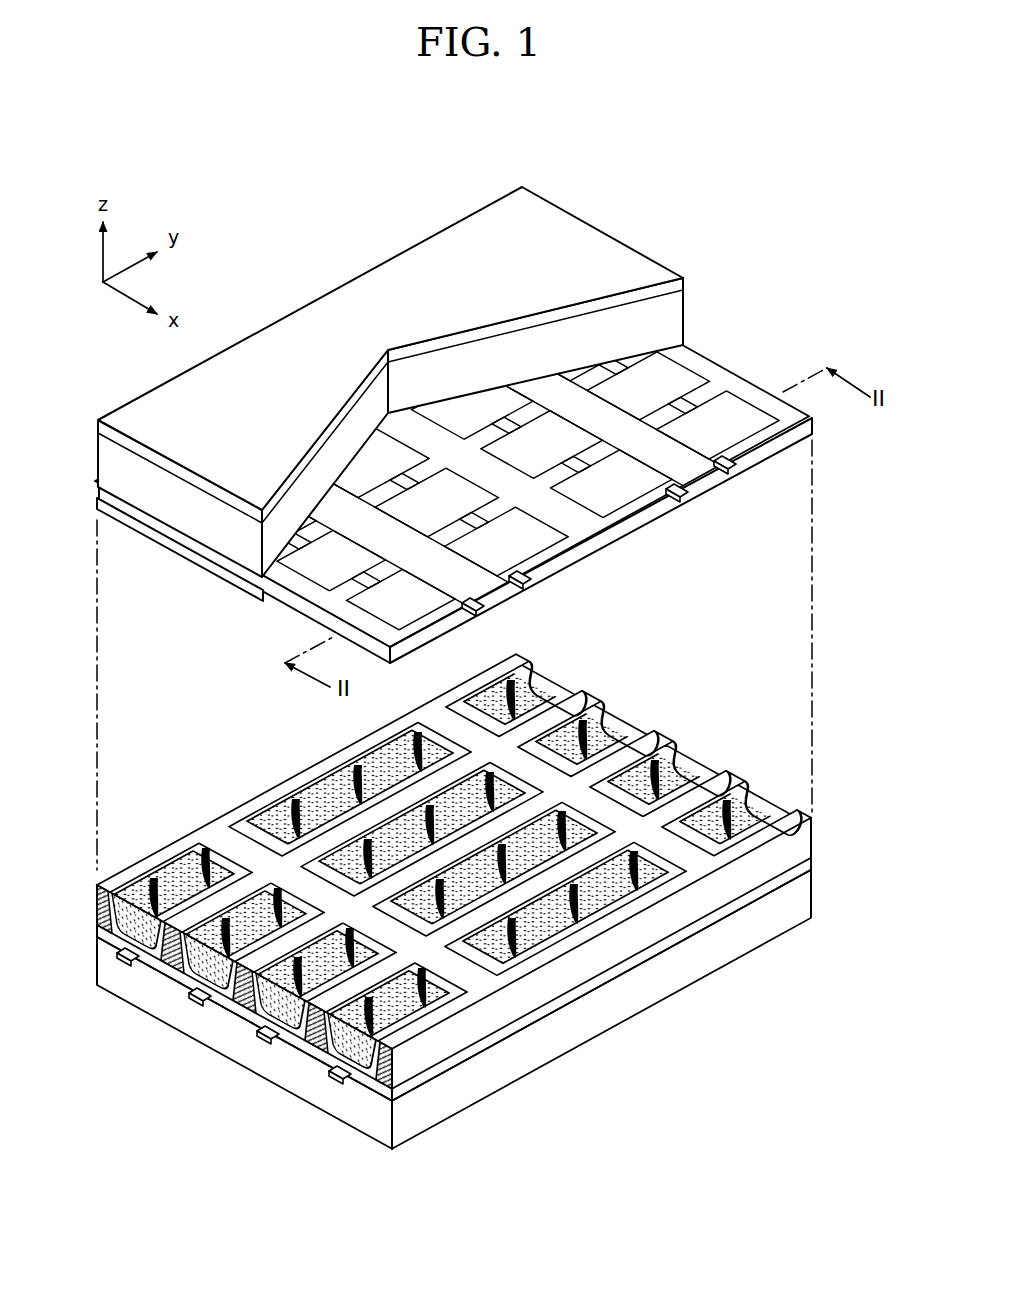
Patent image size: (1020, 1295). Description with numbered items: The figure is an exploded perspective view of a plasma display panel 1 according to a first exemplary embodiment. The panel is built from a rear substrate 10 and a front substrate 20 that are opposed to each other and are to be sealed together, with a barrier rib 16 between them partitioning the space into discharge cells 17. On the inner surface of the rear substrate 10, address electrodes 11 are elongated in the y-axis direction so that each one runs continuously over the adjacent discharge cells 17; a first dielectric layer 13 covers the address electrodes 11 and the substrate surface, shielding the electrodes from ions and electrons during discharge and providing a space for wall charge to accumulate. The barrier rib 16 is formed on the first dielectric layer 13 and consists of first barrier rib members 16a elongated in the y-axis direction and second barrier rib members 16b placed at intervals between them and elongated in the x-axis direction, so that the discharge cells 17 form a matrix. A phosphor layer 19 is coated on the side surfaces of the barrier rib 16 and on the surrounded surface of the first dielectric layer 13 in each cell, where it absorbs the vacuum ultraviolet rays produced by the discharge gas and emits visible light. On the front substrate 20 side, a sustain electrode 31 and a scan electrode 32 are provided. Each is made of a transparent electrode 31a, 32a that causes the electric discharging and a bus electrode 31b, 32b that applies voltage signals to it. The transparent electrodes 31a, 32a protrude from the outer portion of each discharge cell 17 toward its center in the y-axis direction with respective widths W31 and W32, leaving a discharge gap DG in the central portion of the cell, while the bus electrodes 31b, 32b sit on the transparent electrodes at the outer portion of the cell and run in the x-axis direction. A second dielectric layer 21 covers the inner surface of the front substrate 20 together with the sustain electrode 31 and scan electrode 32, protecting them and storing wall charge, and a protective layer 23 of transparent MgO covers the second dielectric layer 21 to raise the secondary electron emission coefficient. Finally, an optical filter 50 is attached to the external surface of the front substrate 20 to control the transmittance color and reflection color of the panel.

The plasma display panel 1 is at (391, 161).
The rear substrate 10 is at (535, 1062).
The address electrode 11 is at (262, 1040).
The first dielectric layer 13 is at (335, 1082).
The barrier rib 16 is at (458, 877).
The first barrier rib members 16a is at (630, 910).
The second barrier rib members 16b is at (670, 858).
The discharge cells 17 is at (400, 850).
The phosphor layer 19 is at (122, 962).
The front substrate 20 is at (670, 320).
The second dielectric layer 21 is at (453, 464).
The protective layer 23 is at (208, 567).
The sustain electrode 31 is at (496, 476).
The transparent electrode 31a is at (540, 542).
The bus electrode 31b is at (519, 586).
The scan electrode 32 is at (464, 475).
The transparent electrode 32a is at (612, 499).
The bus electrode 32b is at (692, 505).
The optical filter 50 is at (597, 248).
The width of transparent electrode W31 is at (510, 504).
The width of transparent electrode W32 is at (601, 449).
The discharge gap DG is at (568, 502).